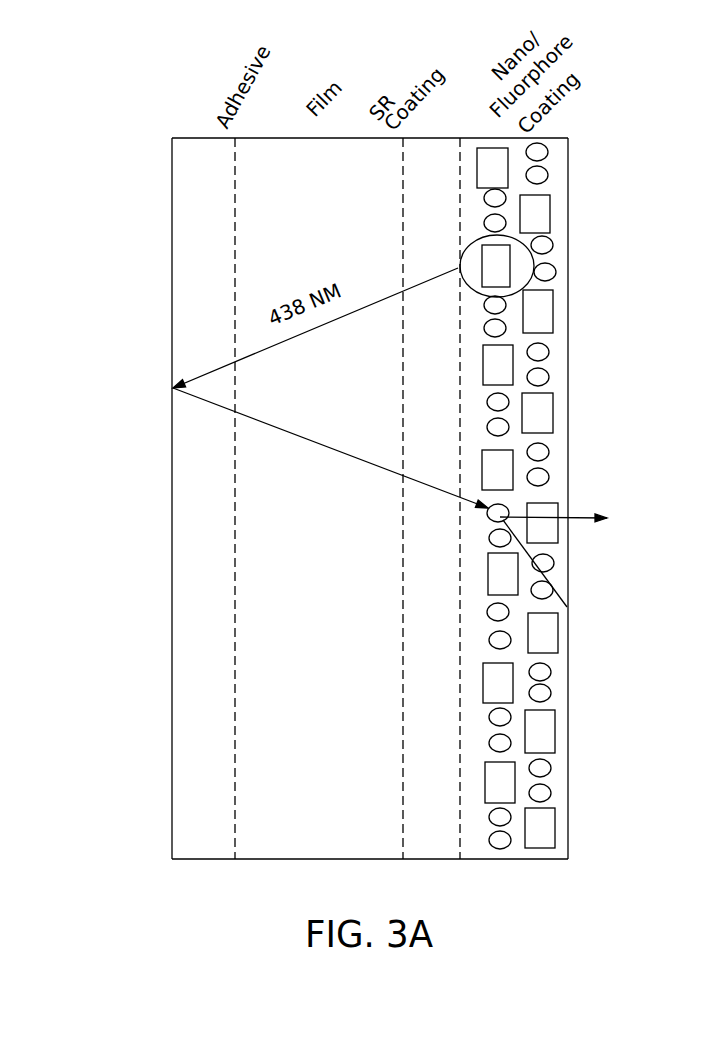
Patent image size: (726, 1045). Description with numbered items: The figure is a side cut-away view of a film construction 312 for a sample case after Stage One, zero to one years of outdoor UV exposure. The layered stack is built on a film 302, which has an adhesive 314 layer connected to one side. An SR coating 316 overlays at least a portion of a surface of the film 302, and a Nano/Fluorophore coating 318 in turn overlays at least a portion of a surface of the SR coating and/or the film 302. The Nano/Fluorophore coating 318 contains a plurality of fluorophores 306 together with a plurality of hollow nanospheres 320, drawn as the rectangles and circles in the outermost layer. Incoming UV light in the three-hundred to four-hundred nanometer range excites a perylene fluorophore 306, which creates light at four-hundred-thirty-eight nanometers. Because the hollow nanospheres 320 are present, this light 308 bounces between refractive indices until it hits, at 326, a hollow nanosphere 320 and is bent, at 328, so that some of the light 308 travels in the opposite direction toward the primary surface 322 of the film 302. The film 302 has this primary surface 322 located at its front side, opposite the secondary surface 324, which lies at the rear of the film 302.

The film 302 is at (285, 138).
The fluorophore 306 is at (546, 418).
The light 308 is at (305, 440).
The film construction 312 is at (608, 247).
The adhesive 314 is at (183, 150).
The SR coating 316 is at (450, 148).
The Nano/Fluorophore coating 318 is at (558, 163).
The hollow nanosphere 320 is at (547, 346).
The primary surface 322 is at (403, 825).
The secondary surface 324 is at (235, 762).
The light hitting hollow nanosphere 326 is at (567, 607).
The light bending 328 is at (573, 520).